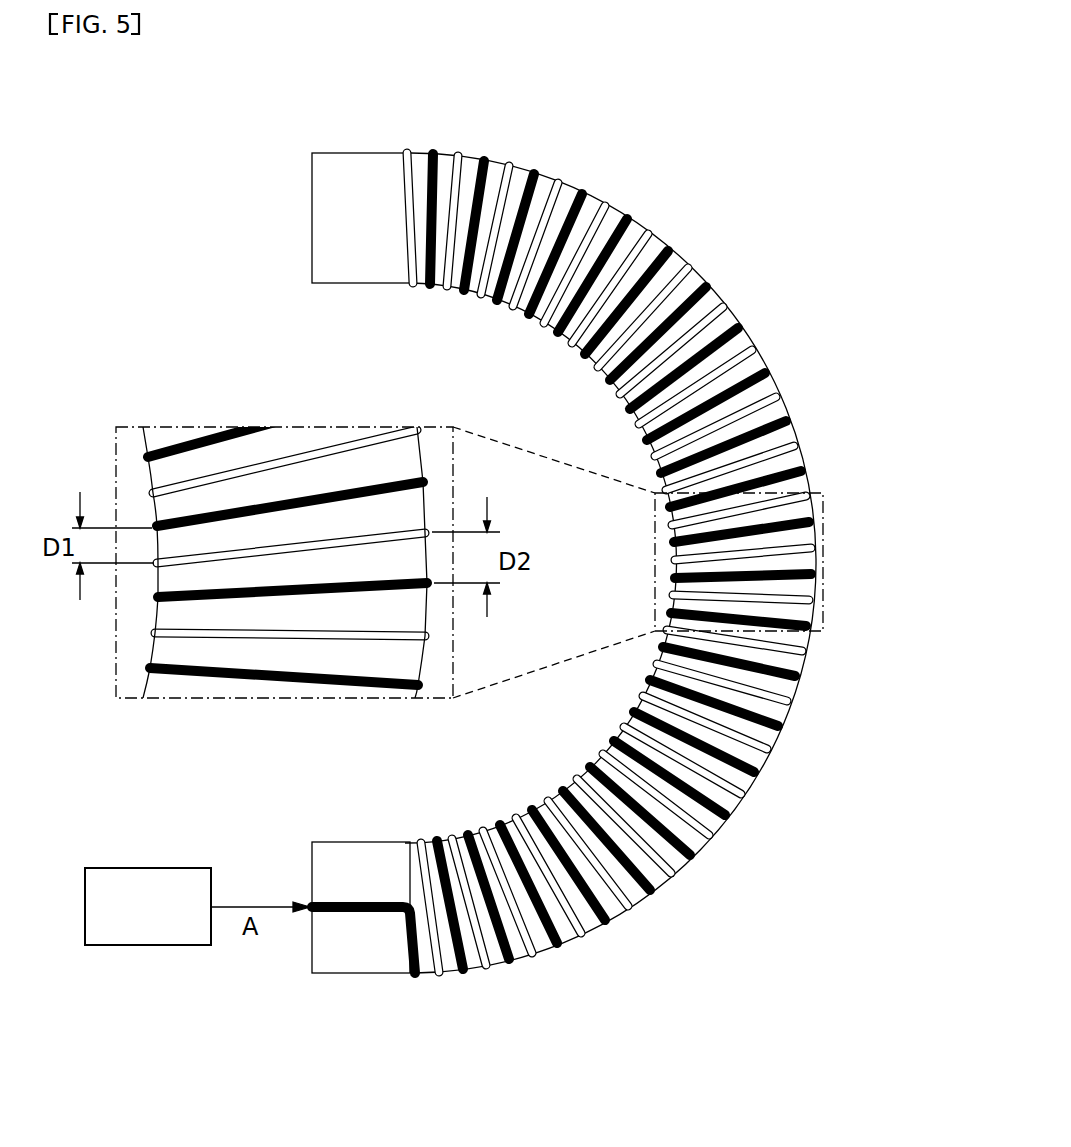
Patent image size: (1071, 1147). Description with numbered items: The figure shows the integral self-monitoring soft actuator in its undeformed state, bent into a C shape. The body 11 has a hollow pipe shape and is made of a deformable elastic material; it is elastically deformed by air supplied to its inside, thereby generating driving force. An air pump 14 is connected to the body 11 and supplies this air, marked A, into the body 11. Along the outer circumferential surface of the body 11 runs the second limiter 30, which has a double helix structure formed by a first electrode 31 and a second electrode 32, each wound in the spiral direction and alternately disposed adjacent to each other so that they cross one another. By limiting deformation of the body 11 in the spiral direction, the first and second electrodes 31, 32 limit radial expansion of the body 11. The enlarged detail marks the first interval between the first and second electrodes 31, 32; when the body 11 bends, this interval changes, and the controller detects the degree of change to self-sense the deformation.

The body 11 is at (356, 165).
The air pump 14 is at (148, 868).
The second limiter 30 is at (542, 563).
The first electrode 31 is at (332, 585).
The second electrode 32 is at (195, 558).